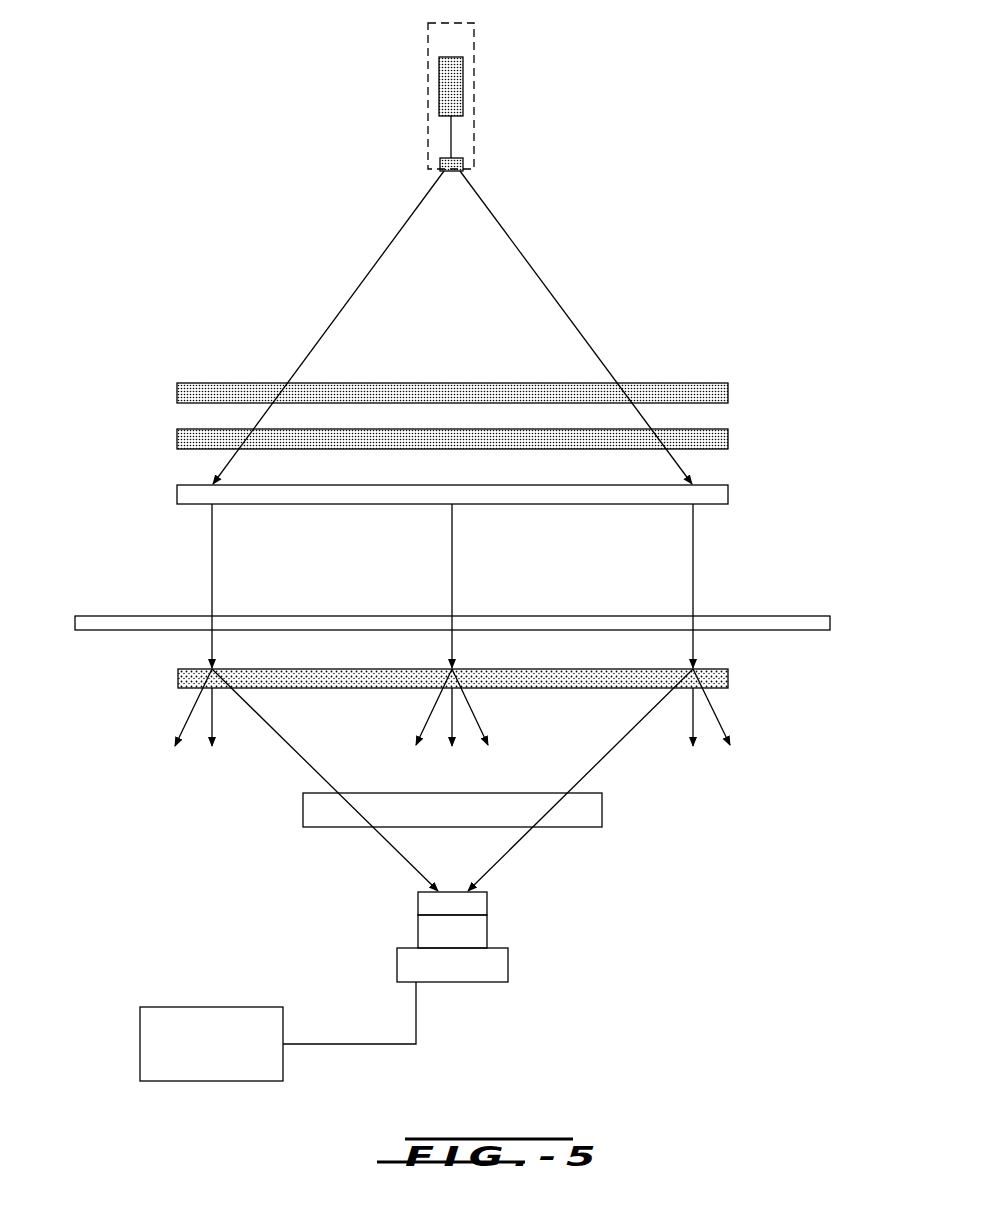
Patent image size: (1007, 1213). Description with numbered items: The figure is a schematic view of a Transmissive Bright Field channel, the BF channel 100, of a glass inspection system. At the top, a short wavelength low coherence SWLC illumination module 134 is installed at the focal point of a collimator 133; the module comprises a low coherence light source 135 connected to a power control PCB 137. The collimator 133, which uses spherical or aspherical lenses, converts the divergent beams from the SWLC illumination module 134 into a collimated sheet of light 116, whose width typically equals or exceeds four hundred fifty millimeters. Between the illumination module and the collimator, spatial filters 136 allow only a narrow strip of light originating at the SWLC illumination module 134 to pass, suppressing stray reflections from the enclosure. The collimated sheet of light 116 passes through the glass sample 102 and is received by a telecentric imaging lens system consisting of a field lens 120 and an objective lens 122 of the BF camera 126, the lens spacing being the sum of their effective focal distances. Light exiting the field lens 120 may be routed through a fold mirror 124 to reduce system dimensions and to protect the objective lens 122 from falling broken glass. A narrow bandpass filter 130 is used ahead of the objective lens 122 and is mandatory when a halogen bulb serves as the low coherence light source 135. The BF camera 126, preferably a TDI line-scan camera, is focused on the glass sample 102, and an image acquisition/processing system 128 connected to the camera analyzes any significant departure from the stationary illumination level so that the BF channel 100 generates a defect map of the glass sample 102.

The BF channel 100 is at (683, 78).
The SWLC illumination module 134 is at (474, 48).
The power control PCB 137 is at (463, 88).
The low coherence light source 135 is at (464, 166).
The spatial filters 136 is at (728, 389).
The collimator 133 is at (728, 495).
The collimated sheet of light 116 is at (212, 560).
The glass sample 102 is at (793, 614).
The field lens 120 is at (728, 675).
The fold mirror 124 is at (602, 805).
The narrow bandpass filter 130 is at (487, 900).
The objective lens 122 is at (487, 930).
The BF camera 126 is at (508, 962).
The image acquisition/processing system 128 is at (192, 1081).